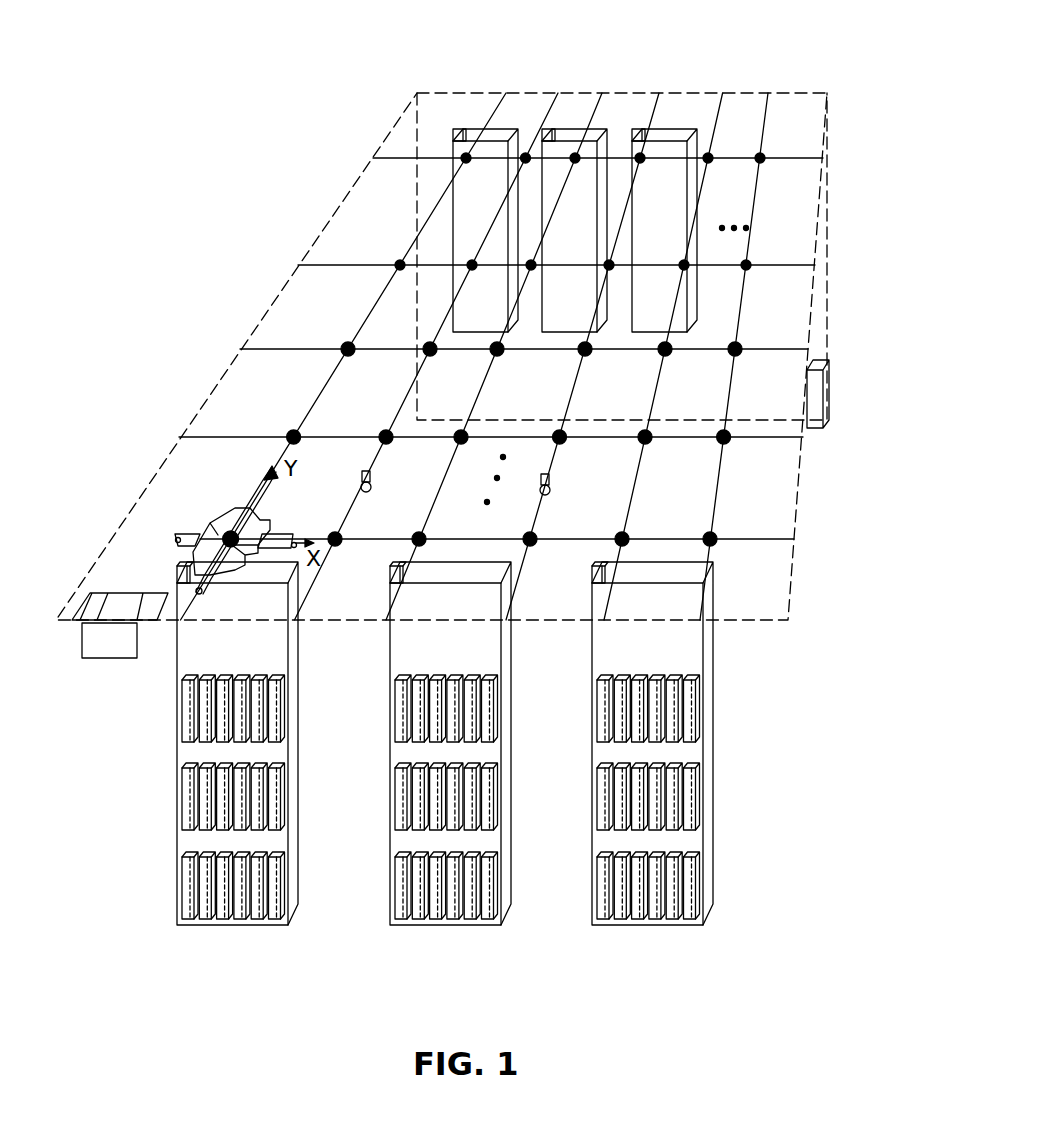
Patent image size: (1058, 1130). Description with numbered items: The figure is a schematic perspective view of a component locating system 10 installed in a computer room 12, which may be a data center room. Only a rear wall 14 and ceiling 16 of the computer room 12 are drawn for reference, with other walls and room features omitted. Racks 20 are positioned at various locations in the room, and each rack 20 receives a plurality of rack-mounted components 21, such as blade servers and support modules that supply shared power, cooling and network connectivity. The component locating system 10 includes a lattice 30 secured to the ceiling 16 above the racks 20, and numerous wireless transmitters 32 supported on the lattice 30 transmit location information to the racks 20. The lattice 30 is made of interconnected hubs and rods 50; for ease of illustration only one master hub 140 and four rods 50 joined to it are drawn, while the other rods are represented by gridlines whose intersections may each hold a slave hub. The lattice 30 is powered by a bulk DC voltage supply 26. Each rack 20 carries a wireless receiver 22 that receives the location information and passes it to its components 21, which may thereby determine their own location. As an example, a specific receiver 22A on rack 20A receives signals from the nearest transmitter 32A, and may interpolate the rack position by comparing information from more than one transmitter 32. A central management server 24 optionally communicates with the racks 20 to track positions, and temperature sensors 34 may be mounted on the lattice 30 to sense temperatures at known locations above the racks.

The component locating system 10 is at (702, 78).
The computer room 12 is at (246, 302).
The rear wall 14 is at (809, 123).
The ceiling 16 is at (397, 121).
The rack 20 is at (690, 298).
The rack 20A is at (300, 876).
The rack-mounted components 21 is at (182, 875).
The wireless receiver 22 is at (645, 128).
The receiver 22A is at (178, 573).
The central management server 24 is at (830, 398).
The bulk DC voltage supply 26 is at (100, 605).
The lattice 30 is at (210, 430).
The wireless transmitters 32 is at (710, 156).
The transmitter 32A is at (222, 520).
The temperature sensors 34 is at (372, 485).
The rods 50 is at (265, 505).
The master hub 140 is at (213, 532).